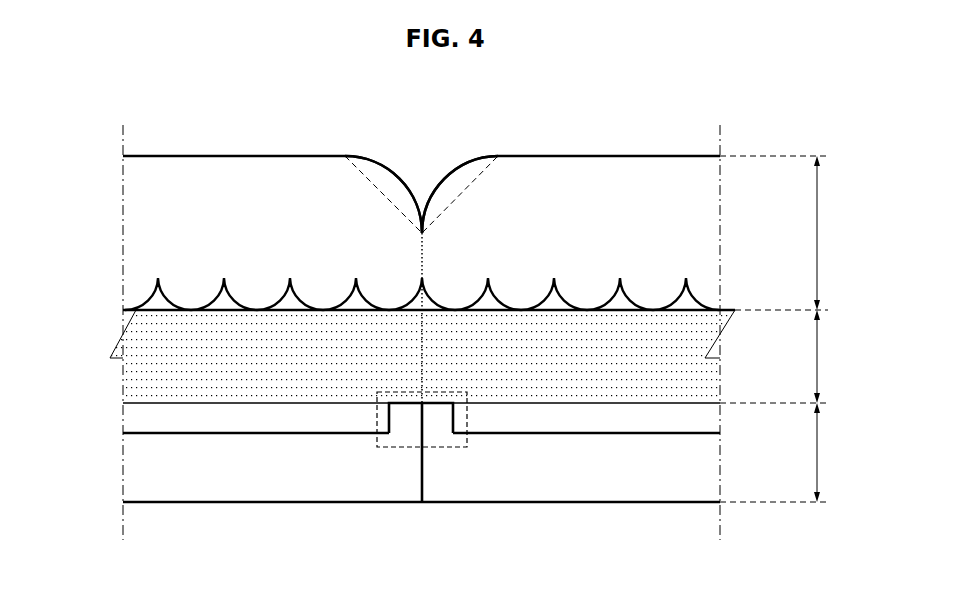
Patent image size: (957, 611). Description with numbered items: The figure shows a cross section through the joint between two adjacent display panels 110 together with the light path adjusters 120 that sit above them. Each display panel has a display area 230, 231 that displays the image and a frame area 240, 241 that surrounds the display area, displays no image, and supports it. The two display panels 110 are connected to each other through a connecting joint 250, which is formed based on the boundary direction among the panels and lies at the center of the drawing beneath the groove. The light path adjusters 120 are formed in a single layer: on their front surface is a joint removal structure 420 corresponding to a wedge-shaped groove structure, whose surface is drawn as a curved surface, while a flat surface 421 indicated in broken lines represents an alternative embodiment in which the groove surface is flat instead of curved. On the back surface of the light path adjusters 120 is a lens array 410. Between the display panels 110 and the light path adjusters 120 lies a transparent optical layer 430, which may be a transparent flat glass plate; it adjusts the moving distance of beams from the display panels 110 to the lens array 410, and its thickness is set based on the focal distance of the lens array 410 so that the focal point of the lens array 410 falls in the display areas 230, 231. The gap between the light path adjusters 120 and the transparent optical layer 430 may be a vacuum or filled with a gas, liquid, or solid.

The display panels 110 is at (491, 452).
The light path adjusters 120 is at (491, 233).
The display area 230 is at (140, 421).
The display area 231 is at (705, 426).
The frame area 240 is at (140, 479).
The frame area 241 is at (705, 480).
The connecting joint 250 is at (444, 447).
The lens array 410 is at (152, 285).
The joint removal structure 420 is at (386, 172).
The flat surface 421 is at (481, 172).
The transparent optical layer 430 is at (485, 356).